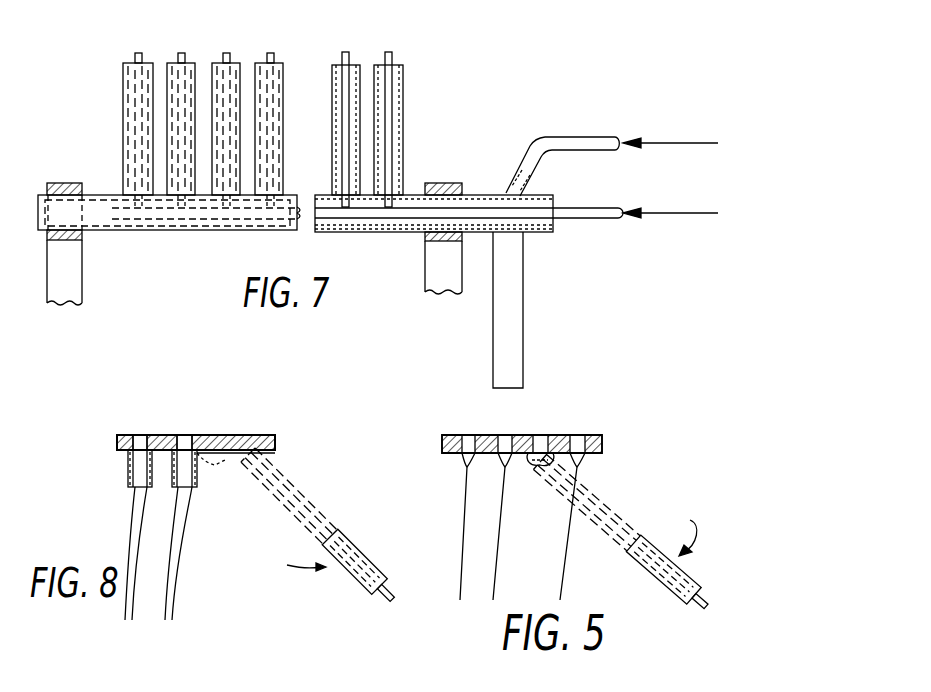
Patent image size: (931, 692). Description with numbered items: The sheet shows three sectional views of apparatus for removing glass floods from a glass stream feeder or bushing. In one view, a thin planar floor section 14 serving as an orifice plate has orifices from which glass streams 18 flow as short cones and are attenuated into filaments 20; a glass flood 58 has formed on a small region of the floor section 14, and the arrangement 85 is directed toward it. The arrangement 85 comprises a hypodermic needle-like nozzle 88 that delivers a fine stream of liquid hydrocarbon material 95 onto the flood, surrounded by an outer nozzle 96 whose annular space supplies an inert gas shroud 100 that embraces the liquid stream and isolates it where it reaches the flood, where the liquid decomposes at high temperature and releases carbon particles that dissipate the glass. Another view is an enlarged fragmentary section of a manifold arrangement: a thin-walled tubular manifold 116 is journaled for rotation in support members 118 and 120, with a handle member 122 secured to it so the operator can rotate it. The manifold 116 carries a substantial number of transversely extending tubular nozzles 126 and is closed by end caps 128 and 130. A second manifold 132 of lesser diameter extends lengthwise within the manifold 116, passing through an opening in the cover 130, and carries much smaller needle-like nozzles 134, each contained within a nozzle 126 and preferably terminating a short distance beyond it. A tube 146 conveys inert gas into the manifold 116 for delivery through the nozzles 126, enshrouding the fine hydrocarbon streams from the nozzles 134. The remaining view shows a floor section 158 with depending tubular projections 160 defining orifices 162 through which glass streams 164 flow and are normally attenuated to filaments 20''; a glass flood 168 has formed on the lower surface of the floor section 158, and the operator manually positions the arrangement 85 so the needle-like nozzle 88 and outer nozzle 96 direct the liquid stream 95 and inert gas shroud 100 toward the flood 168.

In FIG. 5, the floor section 14 is at (605, 445).
In FIG. 5, the glass streams 18 is at (466, 456).
In FIG. 5, the filaments 20 is at (496, 533).
In FIG. 8, the filaments 20'' is at (185, 553).
In FIG. 5, the glass flood 58 is at (528, 462).
In FIG. 8, the arrangement 85 is at (290, 563).
In FIG. 5, the arrangement 85 is at (677, 532).
In FIG. 8, the needle-like nozzle 88 is at (323, 543).
In FIG. 5, the needle-like nozzle 88 is at (632, 547).
In FIG. 8, the stream of liquid hydrocarbon material 95 is at (278, 490).
In FIG. 5, the stream of liquid hydrocarbon material 95 is at (600, 494).
In FIG. 8, the outer nozzle 96 is at (345, 590).
In FIG. 5, the outer nozzle 96 is at (640, 576).
In FIG. 8, the inert gas shroud 100 is at (280, 473).
In FIG. 5, the inert gas shroud 100 is at (590, 478).
In FIG. 7, the tubular manifold 116 is at (142, 231).
In FIG. 7, the support member 118 is at (437, 271).
In FIG. 7, the support member 120 is at (74, 288).
In FIG. 7, the handle member 122 is at (513, 282).
In FIG. 7, the tubular nozzles 126 is at (283, 93).
In FIG. 7, the end cap 128 is at (38, 202).
In FIG. 7, the end cap 130 is at (553, 222).
In FIG. 7, the second manifold 132 is at (418, 213).
In FIG. 7, the needle-like nozzles 134 is at (386, 22).
In FIG. 7, the tube 146 is at (529, 160).
In FIG. 8, the floor section 158 is at (268, 402).
In FIG. 8, the depending tubular projections 160 is at (172, 462).
In FIG. 8, the orifices 162 is at (183, 447).
In FIG. 8, the glass streams 164 is at (135, 489).
In FIG. 8, the glass flood 168 is at (203, 467).